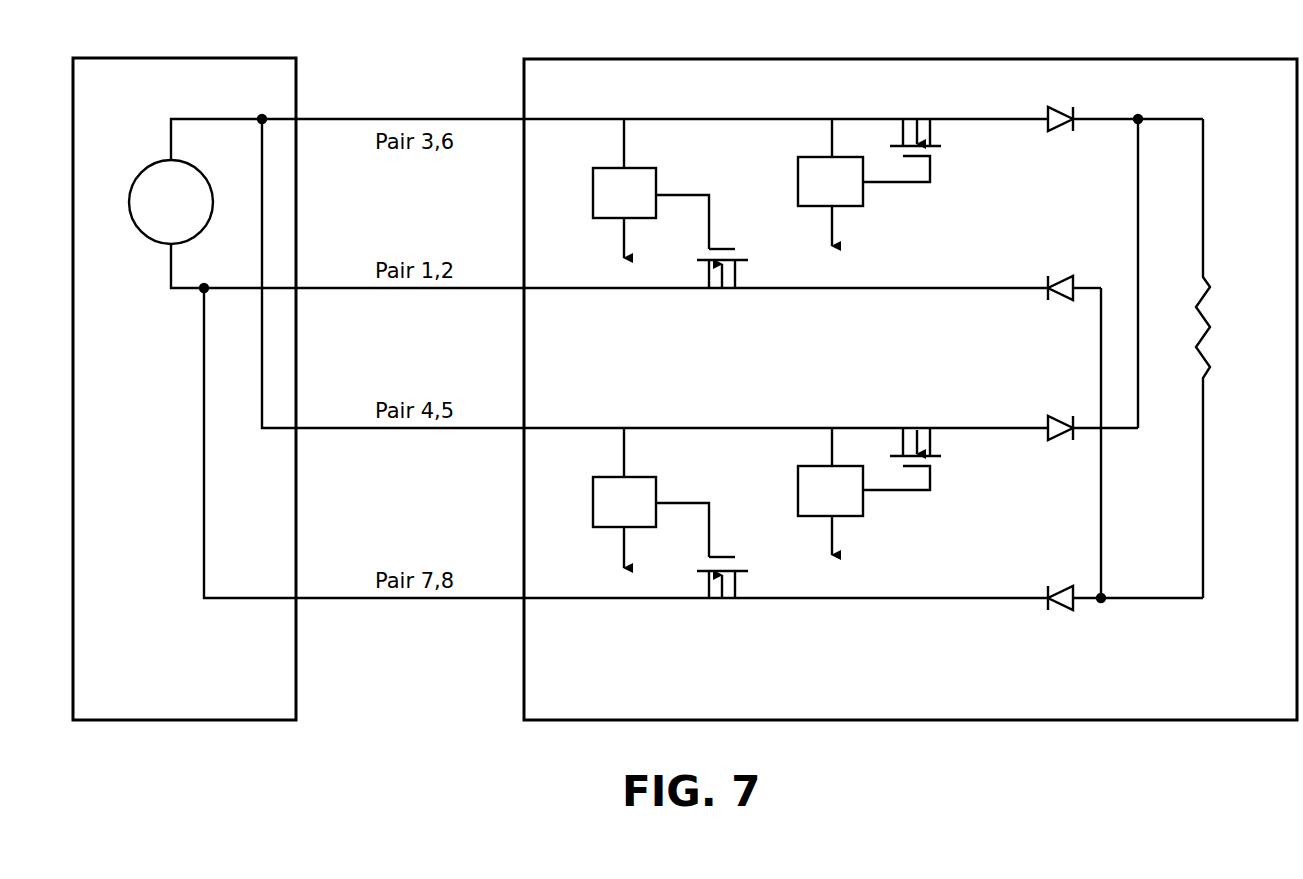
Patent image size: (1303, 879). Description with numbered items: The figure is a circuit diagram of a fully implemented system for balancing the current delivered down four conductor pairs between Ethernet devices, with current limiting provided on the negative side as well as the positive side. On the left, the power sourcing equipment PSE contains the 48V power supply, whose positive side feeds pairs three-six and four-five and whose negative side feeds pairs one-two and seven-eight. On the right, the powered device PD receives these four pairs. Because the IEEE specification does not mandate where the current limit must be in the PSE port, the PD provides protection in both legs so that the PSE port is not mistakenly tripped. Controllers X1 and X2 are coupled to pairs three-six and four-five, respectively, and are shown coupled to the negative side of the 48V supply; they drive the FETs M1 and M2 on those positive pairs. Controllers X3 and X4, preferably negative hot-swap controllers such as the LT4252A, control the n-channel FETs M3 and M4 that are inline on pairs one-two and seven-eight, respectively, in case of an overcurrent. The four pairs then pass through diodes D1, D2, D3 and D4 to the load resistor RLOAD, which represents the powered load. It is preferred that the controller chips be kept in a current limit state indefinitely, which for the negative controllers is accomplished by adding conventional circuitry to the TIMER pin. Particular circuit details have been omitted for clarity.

The power sourcing equipment PSE is at (184, 373).
The powered device PD is at (910, 374).
The 48V power supply 48V is at (171, 202).
The controller X1 is at (832, 190).
The controller X2 is at (832, 499).
The controller X3 is at (626, 196).
The controller X4 is at (622, 500).
The FET M1 is at (902, 134).
The FET M2 is at (902, 442).
The n-channel FET M3 is at (702, 260).
The n-channel FET M4 is at (702, 569).
The diode D1 is at (1124, 104).
The diode D2 is at (1073, 274).
The diode D3 is at (1091, 413).
The diode D4 is at (1124, 583).
The load resistor RLOAD is at (1225, 358).